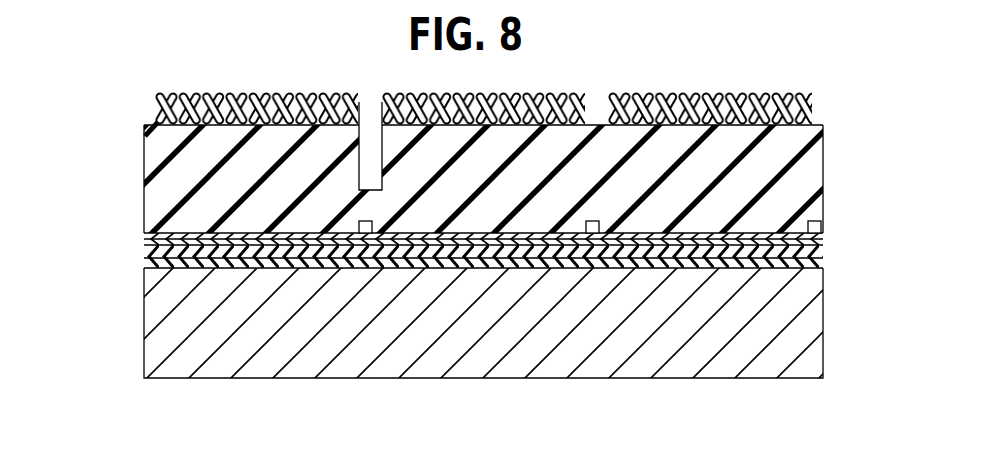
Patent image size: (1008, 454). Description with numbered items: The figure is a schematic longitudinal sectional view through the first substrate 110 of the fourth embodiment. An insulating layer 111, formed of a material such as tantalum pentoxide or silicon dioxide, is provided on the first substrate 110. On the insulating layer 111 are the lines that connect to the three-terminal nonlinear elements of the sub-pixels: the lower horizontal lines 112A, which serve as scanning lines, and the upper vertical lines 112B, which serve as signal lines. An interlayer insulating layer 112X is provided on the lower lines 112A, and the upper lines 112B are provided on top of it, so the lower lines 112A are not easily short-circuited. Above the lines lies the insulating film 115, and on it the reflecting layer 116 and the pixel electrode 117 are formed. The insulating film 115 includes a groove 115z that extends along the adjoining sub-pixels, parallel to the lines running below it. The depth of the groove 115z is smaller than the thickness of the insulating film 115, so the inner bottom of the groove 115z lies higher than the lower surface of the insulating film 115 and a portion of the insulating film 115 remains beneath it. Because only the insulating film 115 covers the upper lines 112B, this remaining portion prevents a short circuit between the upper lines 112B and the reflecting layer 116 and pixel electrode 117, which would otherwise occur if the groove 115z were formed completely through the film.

The first substrate 110 is at (815, 318).
The insulating layer 111 is at (818, 262).
The lower horizontal lines 112A is at (479, 252).
The upper vertical lines 112B is at (365, 236).
The interlayer insulating layer 112X is at (827, 235).
The insulating film 115 is at (816, 174).
The groove 115z is at (359, 121).
The reflecting layer 116 is at (814, 108).
The pixel electrode 117 is at (781, 96).